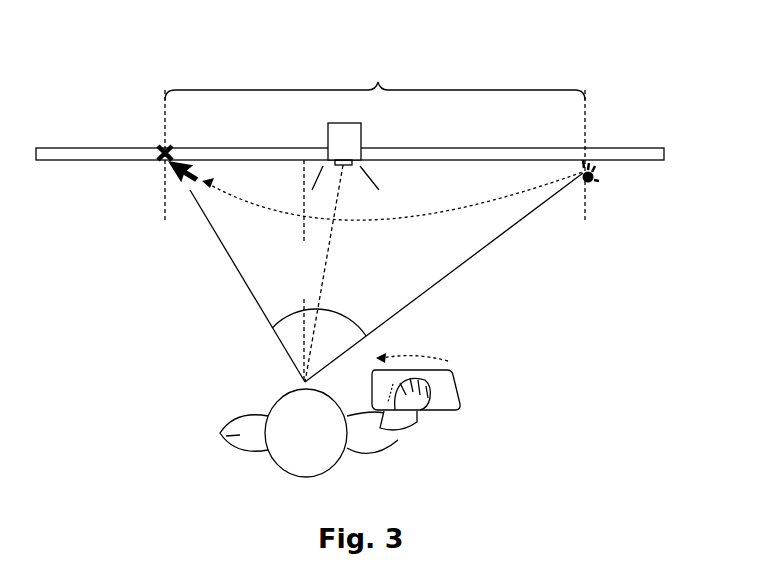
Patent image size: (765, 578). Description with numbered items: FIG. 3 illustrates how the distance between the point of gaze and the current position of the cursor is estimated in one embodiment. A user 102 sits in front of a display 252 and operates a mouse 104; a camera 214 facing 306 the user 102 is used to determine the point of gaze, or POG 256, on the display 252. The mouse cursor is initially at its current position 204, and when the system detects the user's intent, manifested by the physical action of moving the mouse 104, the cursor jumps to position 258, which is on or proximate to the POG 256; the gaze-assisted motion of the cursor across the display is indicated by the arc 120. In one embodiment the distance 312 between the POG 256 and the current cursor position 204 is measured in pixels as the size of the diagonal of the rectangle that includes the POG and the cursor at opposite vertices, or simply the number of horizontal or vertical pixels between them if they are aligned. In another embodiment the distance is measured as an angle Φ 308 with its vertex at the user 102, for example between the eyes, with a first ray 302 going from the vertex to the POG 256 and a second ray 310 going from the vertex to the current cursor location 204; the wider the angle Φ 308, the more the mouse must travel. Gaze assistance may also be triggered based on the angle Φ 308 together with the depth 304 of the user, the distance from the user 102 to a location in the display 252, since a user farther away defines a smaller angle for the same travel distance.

The user 102 is at (240, 435).
The mouse 104 is at (455, 387).
The distance arc between POG and cursor 120 is at (436, 217).
The current position of the cursor 204 is at (600, 178).
The camera 214 is at (328, 132).
The display 252 is at (638, 150).
The point of gaze (POG) 256 is at (162, 148).
The cursor position after gaze-assisted jump 258 is at (168, 173).
The first ray 302 is at (243, 280).
The depth 304 is at (302, 232).
The facing direction of camera 306 is at (330, 238).
The angle Φ 308 is at (362, 313).
The second ray 310 is at (478, 255).
The distance between POG and cursor 312 is at (516, 80).